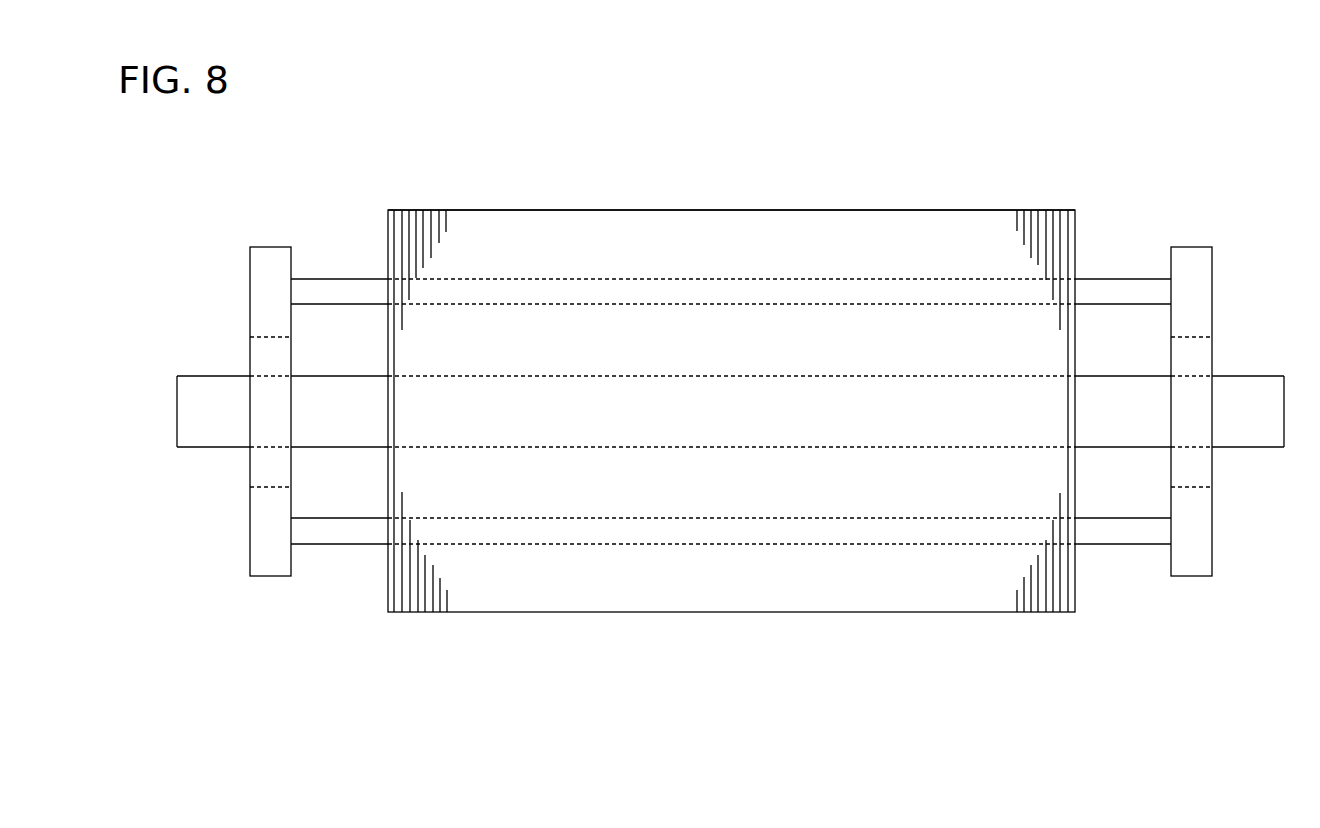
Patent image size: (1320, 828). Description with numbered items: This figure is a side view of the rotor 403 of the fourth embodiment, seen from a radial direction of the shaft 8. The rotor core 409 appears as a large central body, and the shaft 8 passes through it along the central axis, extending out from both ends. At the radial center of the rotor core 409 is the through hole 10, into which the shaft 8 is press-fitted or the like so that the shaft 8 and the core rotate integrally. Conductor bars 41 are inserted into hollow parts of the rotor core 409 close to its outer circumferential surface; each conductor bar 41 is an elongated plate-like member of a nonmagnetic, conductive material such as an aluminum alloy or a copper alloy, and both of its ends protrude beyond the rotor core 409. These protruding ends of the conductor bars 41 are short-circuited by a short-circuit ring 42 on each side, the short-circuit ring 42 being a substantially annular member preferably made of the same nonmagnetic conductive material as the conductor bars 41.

The rotor 403 is at (1012, 186).
The rotor core 409 is at (797, 210).
The through hole 10 is at (549, 447).
The conductor bar 41 is at (592, 278).
The short-circuit ring 42 is at (248, 292).
The shaft 8 is at (1243, 375).